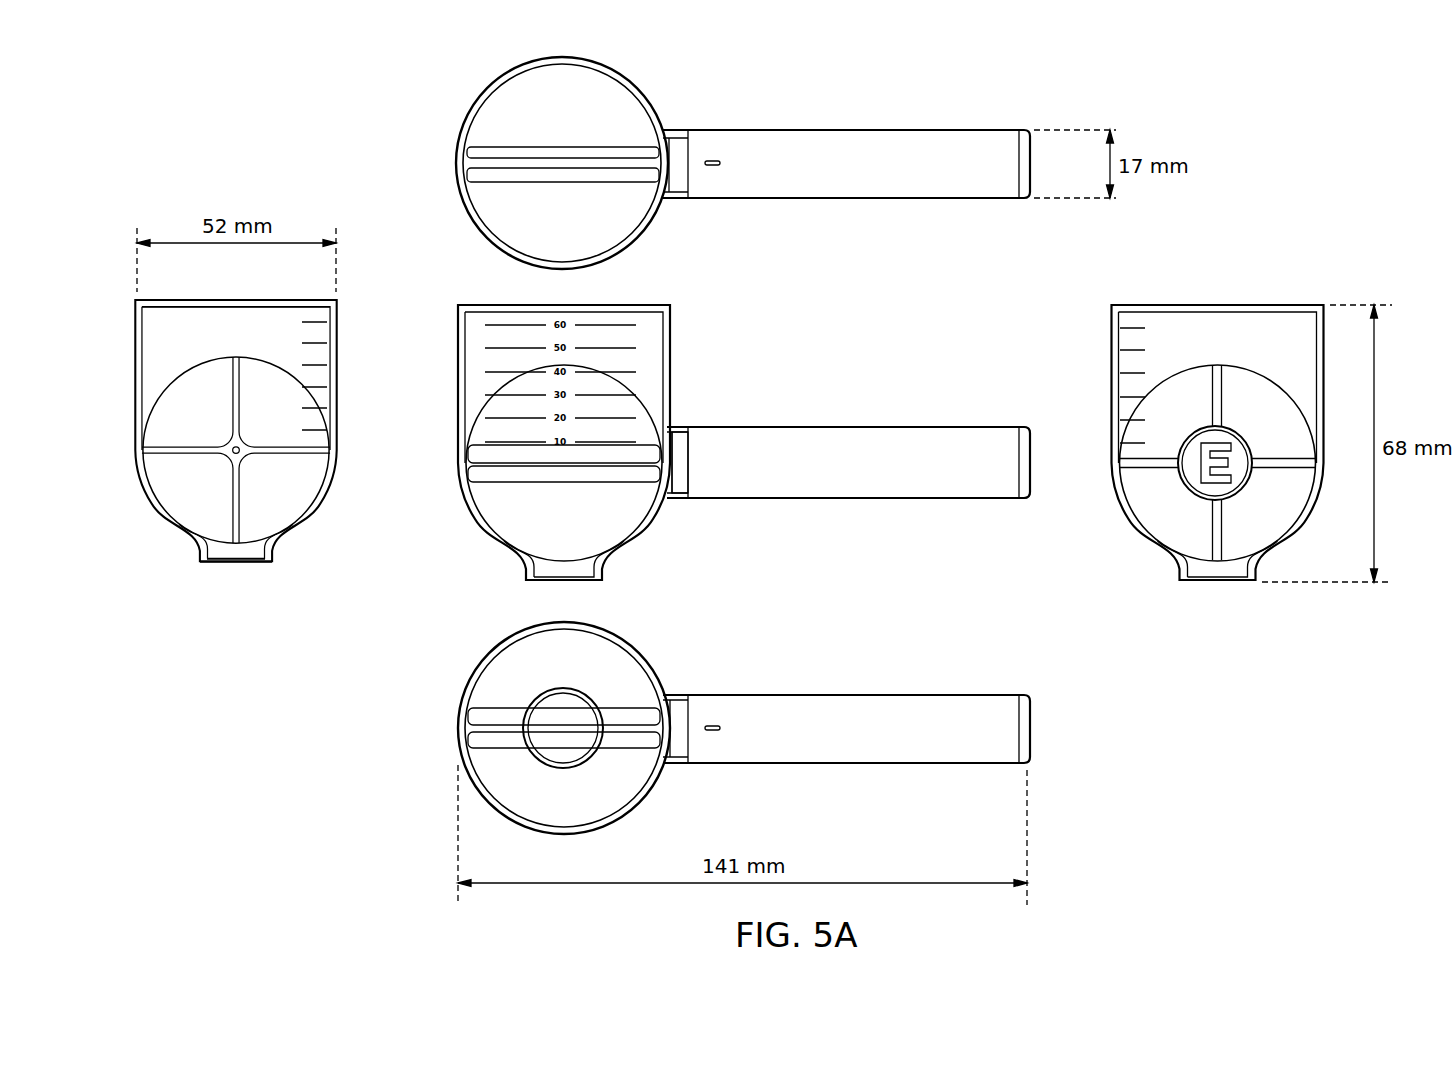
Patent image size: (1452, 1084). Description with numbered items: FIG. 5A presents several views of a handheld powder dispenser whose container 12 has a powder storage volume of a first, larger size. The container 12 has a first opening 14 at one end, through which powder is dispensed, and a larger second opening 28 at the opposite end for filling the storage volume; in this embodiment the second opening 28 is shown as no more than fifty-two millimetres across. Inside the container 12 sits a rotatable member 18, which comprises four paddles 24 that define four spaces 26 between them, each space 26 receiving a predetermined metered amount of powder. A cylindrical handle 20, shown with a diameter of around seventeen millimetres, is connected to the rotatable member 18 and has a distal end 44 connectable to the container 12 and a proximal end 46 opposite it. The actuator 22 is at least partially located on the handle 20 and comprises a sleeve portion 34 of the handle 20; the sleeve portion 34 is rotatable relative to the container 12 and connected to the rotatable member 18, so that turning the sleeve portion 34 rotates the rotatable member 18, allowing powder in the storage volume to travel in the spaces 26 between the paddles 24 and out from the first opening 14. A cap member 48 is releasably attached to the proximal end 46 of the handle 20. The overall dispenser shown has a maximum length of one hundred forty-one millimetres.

The container 12 is at (135, 377).
The first opening 14 is at (230, 563).
The rotatable member 18 is at (500, 158).
The handle 20 is at (846, 412).
The actuator 22 is at (846, 412).
The paddles 24 is at (143, 447).
The spaces 26 is at (1242, 427).
The second opening 28 is at (177, 300).
The sleeve portion 34 is at (918, 90).
The distal end 44 is at (690, 477).
The proximal end 46 is at (1022, 500).
The cap member 48 is at (1025, 465).